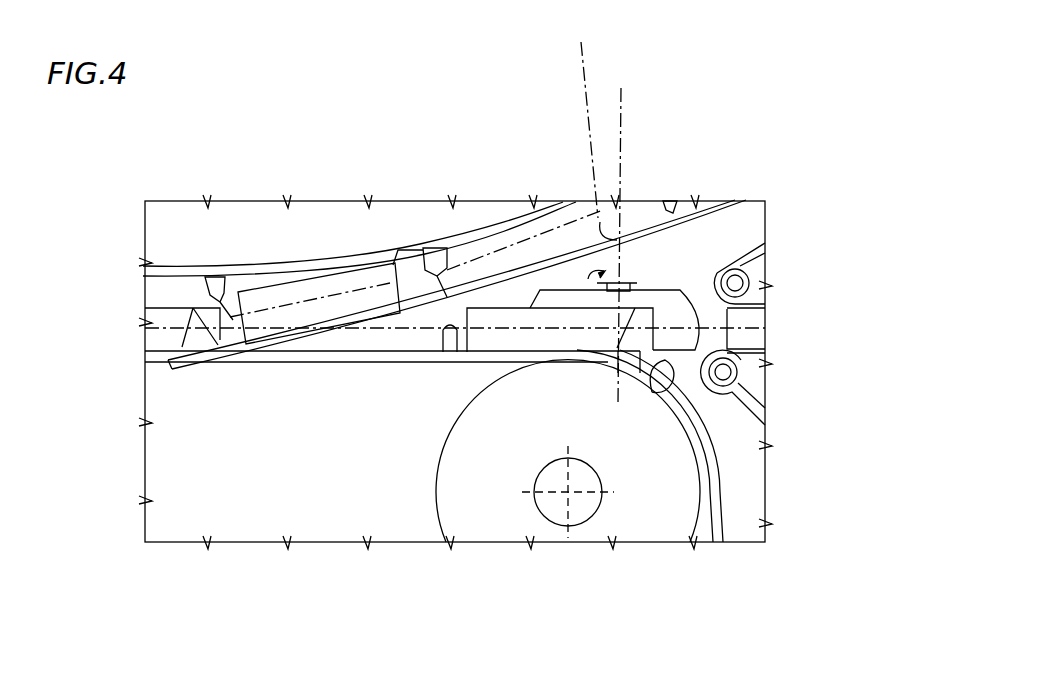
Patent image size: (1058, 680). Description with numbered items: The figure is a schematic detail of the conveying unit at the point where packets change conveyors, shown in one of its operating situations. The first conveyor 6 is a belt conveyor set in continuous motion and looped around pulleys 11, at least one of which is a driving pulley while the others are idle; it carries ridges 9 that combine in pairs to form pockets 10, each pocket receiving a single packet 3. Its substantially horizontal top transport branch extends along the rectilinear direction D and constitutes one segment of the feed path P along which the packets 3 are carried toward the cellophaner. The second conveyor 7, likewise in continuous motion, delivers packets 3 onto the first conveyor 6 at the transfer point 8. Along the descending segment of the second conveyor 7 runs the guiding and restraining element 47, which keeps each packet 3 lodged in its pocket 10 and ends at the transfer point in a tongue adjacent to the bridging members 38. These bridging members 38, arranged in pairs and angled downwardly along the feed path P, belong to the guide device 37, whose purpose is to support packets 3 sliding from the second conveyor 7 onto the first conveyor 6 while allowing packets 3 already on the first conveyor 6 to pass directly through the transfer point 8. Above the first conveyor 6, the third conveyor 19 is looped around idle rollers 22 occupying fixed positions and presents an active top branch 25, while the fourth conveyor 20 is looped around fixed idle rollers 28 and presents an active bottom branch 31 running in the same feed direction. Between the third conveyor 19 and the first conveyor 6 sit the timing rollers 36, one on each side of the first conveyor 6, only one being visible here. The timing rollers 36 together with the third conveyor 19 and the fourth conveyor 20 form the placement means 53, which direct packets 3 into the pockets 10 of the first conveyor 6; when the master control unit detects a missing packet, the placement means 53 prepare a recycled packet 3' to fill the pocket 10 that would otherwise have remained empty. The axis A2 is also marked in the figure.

The packets 3 is at (230, 233).
The recycled packet 3' is at (560, 224).
The first conveyor 6 is at (728, 527).
The second conveyor 7 is at (472, 221).
The transfer point 8 is at (378, 237).
The ridges 9 is at (230, 317).
The pockets 10 is at (284, 352).
The pulleys 11 is at (510, 520).
The third conveyor 19 is at (748, 424).
The fourth conveyor 20 is at (748, 239).
The idle rollers 22 is at (739, 380).
The active top branch 25 is at (768, 338).
The idle rollers 28 is at (751, 277).
The active bottom branch 31 is at (761, 299).
The timing rollers 36 is at (690, 309).
The guide device 37 is at (353, 335).
The bridging members 38 is at (208, 343).
The guiding and restraining element 47 is at (690, 214).
The placement means 53 is at (691, 379).
The pivot axis A2 is at (532, 142).
The feed path P is at (612, 232).
The rectilinear direction D is at (723, 328).